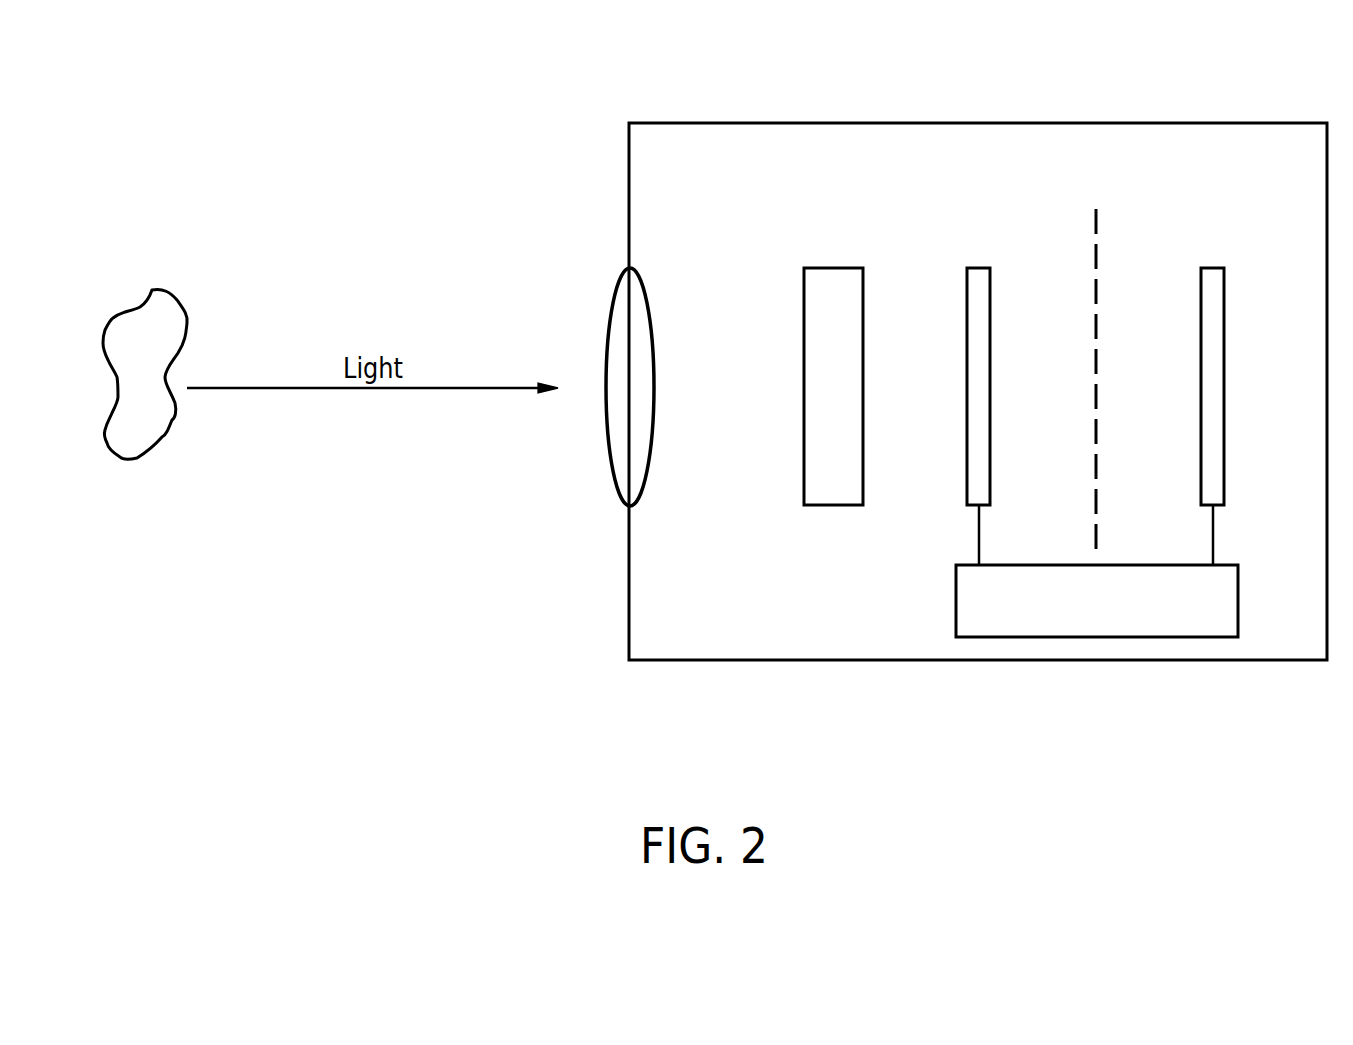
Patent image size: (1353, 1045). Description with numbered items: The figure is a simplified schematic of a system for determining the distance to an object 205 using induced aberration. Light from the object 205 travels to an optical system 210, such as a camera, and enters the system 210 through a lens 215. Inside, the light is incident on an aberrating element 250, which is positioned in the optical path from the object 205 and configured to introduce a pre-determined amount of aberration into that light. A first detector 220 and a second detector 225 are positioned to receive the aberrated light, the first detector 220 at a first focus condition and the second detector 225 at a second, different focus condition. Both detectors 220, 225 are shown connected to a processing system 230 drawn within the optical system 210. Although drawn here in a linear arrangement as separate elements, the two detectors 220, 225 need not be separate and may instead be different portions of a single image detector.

The object 205 is at (152, 290).
The optical system 210 is at (1253, 122).
The lens 215 is at (613, 292).
The first detector 220 is at (980, 268).
The second detector 225 is at (1215, 268).
The processing system 230 is at (956, 583).
The aberrating element 250 is at (852, 268).